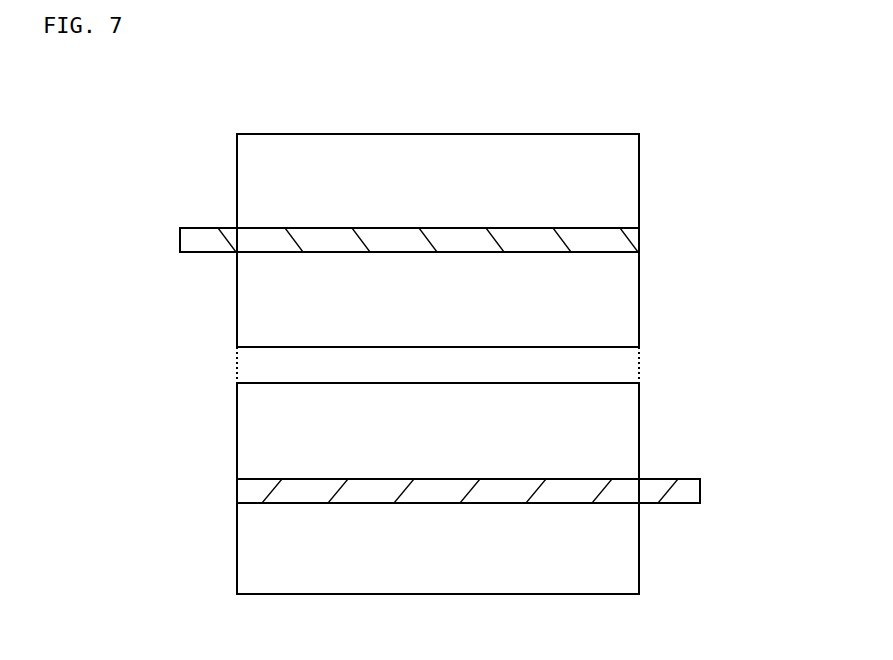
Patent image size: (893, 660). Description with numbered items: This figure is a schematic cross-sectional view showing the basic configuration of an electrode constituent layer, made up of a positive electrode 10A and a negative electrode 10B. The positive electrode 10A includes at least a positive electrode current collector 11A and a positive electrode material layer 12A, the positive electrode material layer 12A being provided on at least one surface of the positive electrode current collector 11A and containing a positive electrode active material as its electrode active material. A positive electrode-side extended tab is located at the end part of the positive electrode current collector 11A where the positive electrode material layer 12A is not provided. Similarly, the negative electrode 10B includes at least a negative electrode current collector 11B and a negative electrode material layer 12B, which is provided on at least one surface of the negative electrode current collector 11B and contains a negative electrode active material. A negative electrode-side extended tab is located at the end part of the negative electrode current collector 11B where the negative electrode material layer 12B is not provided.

The positive electrode 10A is at (645, 134).
The positive electrode current collector 11A is at (187, 242).
The positive electrode material layer 12A is at (267, 196).
The negative electrode 10B is at (232, 383).
The negative electrode current collector 11B is at (688, 490).
The negative electrode material layer 12B is at (605, 435).